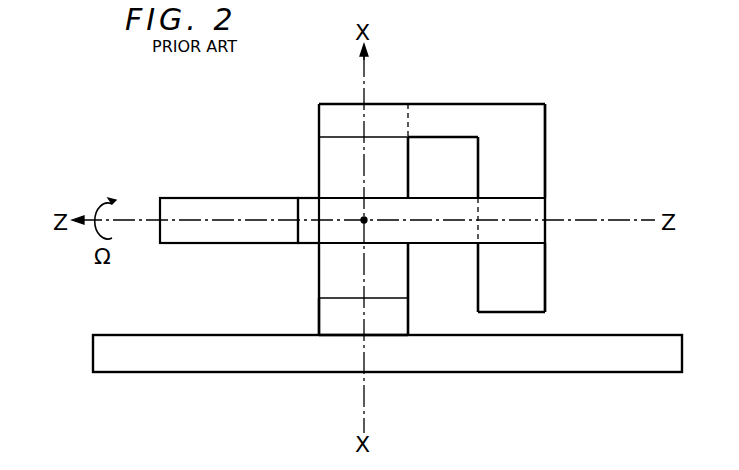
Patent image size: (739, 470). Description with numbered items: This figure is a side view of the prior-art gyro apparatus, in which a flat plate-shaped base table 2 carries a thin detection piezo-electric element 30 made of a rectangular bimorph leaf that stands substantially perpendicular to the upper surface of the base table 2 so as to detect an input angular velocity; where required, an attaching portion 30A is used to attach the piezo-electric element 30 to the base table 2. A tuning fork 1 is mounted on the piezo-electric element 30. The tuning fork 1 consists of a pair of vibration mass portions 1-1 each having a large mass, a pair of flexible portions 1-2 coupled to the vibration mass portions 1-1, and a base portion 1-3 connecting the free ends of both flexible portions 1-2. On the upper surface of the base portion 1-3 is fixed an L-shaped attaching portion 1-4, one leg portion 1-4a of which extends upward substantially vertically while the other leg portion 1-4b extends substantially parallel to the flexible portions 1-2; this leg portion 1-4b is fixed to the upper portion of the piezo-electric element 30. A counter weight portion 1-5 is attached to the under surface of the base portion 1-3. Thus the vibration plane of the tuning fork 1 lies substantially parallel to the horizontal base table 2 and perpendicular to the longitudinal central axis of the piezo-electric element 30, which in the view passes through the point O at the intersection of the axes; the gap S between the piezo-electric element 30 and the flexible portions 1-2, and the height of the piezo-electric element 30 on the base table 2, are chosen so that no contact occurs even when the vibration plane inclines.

The tuning fork 1 is at (308, 122).
The vibration mass portion 1-1 is at (187, 206).
The flexible portion 1-2 is at (308, 198).
The base portion 1-3 is at (538, 204).
The L-shaped attaching portion 1-4 is at (430, 119).
The leg portion 1-4a is at (535, 132).
The leg portion 1-4b is at (335, 113).
The counter weight portion 1-5 is at (535, 288).
The base table 2 is at (624, 362).
The detection piezo-electric element 30 is at (319, 285).
The attaching portion 30A is at (346, 330).
The gap S is at (412, 245).
The origin O is at (367, 222).